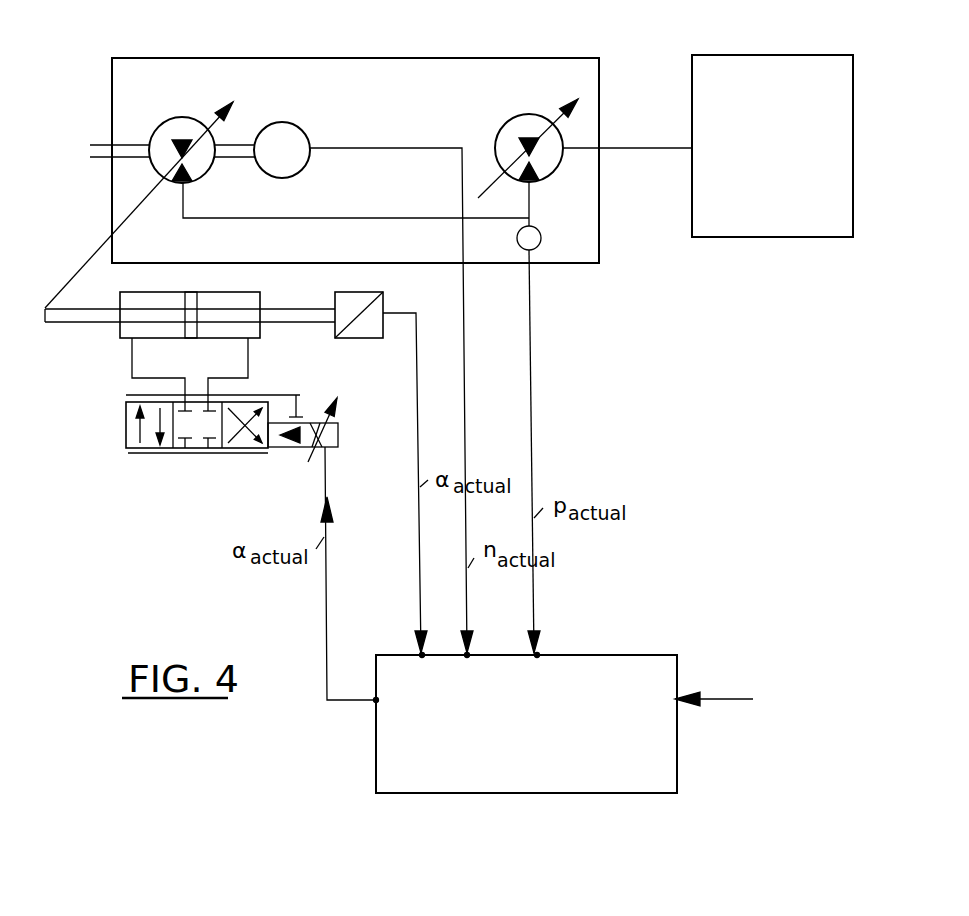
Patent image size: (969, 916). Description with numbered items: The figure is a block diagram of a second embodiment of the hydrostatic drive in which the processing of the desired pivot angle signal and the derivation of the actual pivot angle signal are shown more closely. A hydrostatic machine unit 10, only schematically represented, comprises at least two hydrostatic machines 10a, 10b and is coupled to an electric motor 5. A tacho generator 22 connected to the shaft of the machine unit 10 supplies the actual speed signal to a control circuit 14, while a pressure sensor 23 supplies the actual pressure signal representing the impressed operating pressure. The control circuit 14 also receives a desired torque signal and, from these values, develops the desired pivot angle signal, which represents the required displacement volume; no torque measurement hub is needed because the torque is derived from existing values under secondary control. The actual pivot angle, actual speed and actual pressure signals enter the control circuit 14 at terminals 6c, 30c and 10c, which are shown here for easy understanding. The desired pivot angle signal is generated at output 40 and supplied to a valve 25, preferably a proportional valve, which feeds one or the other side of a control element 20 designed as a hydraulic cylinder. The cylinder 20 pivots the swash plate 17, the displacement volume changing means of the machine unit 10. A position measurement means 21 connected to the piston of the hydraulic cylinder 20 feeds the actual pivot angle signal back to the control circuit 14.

The hydrostatic machine unit 10 is at (492, 56).
The hydrostatic machine 10a is at (180, 117).
The hydrostatic machine 10b is at (514, 116).
The tacho generator 22 is at (302, 130).
The pressure sensor 23 is at (538, 247).
The electric motor 5 is at (773, 232).
The swash plate 17 is at (65, 292).
The control element 20 is at (119, 340).
The position measurement means 21 is at (353, 333).
The valve 25 is at (150, 454).
The output of the PD closed loop controller 40 is at (375, 703).
The control circuit 14 is at (607, 787).
The terminal 6c is at (422, 657).
The terminal 30c is at (467, 657).
The terminal 10c is at (537, 657).